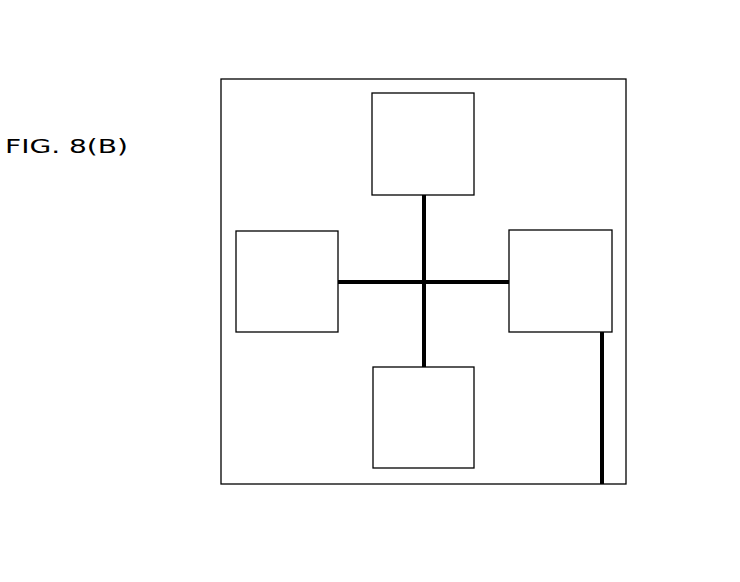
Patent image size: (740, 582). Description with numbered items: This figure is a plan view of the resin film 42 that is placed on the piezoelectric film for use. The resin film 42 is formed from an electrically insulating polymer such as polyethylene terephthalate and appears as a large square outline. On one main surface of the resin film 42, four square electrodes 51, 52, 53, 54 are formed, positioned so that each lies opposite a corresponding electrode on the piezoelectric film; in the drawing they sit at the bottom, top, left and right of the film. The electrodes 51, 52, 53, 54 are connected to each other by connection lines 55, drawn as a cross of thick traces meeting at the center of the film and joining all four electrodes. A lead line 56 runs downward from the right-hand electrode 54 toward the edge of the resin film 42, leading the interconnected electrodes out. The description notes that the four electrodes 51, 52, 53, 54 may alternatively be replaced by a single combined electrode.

The resin film 42 is at (621, 98).
The electrode 51 is at (419, 460).
The electrode 52 is at (412, 100).
The electrode 53 is at (247, 284).
The electrode 54 is at (606, 281).
The connection lines 55 is at (425, 217).
The lead line 56 is at (603, 392).